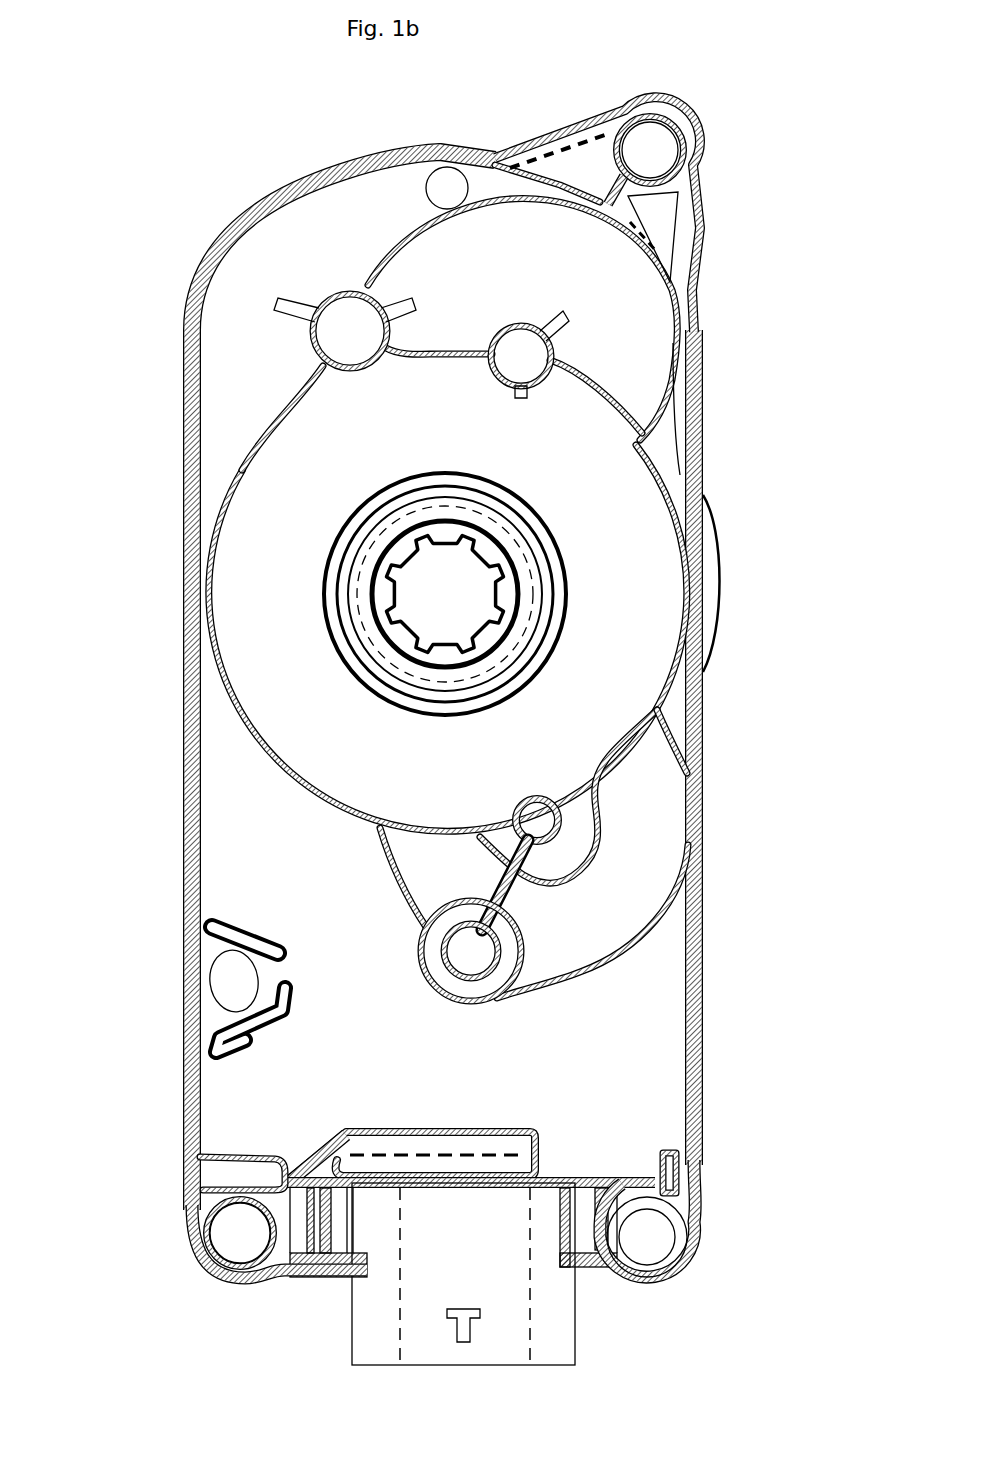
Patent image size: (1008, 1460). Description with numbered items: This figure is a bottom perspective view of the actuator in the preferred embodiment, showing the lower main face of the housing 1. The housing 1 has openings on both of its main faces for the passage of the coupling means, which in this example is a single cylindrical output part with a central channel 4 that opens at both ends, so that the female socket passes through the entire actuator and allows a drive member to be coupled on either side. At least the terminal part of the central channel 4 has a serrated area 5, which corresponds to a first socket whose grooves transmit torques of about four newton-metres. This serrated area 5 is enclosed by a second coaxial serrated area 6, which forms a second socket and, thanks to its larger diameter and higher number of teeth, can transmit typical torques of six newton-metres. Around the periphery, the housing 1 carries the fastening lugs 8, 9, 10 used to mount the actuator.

The housing 1 is at (250, 203).
The central channel 4 is at (455, 594).
The serrated area 5 is at (410, 558).
The second coaxial serrated area 6 is at (370, 607).
The fastening lug 8 is at (675, 133).
The fastening lug 9 is at (683, 1240).
The fastening lug 10 is at (237, 1263).